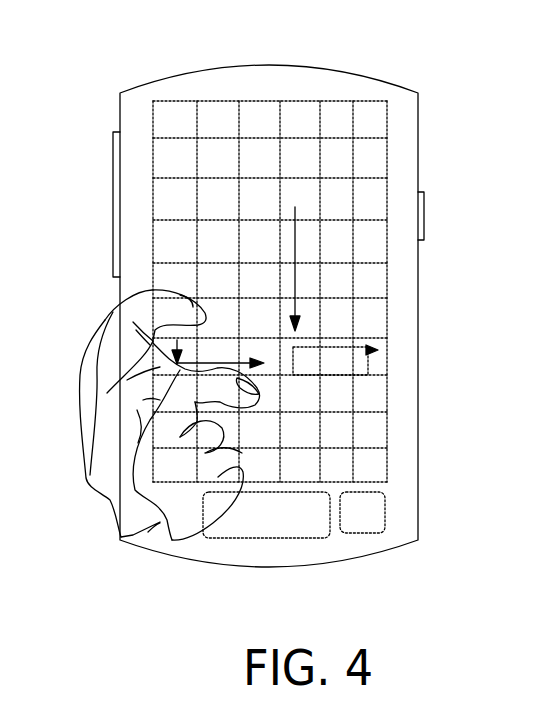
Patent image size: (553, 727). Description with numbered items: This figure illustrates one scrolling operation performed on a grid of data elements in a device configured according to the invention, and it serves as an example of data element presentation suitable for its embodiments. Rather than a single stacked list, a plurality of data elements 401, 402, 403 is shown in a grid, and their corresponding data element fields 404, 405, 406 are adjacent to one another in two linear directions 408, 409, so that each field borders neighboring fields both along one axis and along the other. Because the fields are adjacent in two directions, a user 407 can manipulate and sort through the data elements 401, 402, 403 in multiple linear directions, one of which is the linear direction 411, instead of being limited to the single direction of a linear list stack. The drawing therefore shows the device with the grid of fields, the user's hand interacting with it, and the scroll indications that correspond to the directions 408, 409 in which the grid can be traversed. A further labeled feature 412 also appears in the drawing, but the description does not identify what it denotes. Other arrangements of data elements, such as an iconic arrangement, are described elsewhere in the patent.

The data element 401 is at (138, 88).
The data element 402 is at (218, 110).
The data element 403 is at (163, 157).
The data element field 404 is at (190, 110).
The data element field 405 is at (280, 110).
The data element field 406 is at (163, 177).
The user 407 is at (178, 528).
The linear direction 408 is at (333, 350).
The linear direction 409 is at (297, 213).
The linear direction 411 is at (177, 340).
The thumb touch point 412 is at (233, 373).